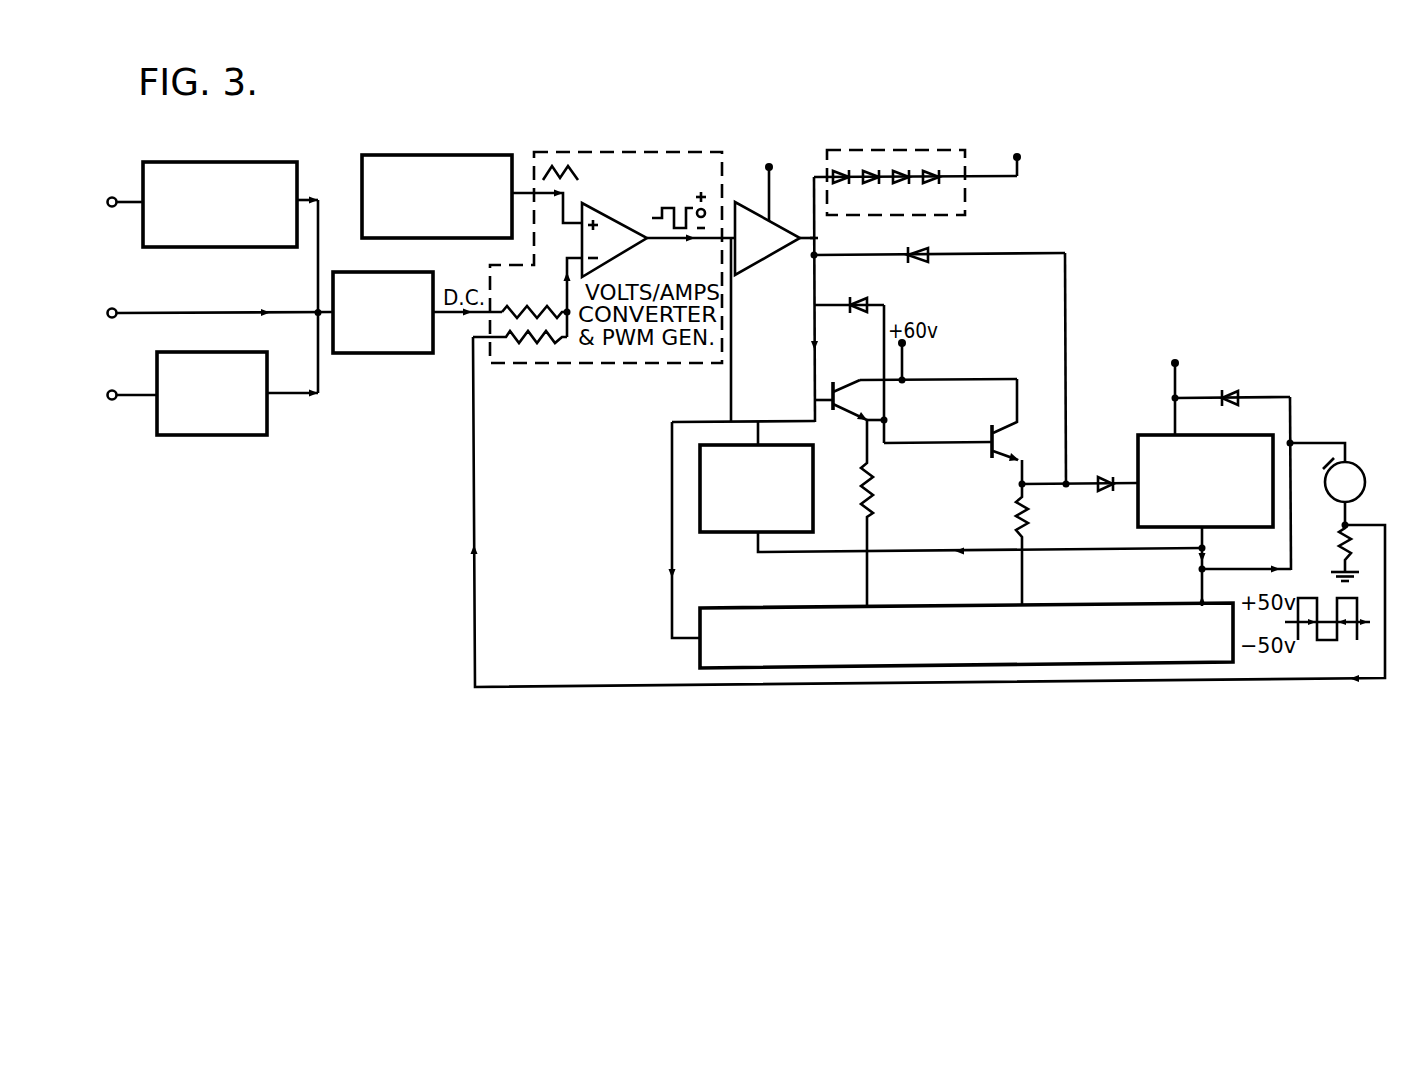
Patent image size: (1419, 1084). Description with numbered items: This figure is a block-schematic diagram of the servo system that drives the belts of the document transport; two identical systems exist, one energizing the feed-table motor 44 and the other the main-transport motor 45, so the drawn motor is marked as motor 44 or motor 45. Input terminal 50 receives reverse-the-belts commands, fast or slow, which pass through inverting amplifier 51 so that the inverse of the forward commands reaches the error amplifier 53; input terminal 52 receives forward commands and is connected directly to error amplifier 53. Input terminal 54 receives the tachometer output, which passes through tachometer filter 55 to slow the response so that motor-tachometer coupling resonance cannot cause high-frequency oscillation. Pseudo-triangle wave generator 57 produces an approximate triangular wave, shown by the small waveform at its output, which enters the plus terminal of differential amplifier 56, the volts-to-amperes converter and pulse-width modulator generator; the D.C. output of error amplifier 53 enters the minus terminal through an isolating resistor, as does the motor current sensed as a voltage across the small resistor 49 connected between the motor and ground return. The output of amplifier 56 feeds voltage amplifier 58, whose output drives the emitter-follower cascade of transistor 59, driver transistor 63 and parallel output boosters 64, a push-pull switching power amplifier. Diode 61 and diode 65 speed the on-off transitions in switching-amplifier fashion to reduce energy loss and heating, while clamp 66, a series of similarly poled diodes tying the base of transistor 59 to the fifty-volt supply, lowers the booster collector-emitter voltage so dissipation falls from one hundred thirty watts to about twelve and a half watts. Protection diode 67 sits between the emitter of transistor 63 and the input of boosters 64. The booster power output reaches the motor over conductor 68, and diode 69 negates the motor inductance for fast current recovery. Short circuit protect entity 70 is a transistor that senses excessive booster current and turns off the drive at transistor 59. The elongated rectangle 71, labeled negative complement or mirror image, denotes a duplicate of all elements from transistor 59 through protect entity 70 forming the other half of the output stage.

The motor 44 is at (1357, 467).
The motor 45 is at (1373, 492).
The resistor 49 is at (1332, 552).
The input terminal 50 is at (120, 219).
The inverting amplifier 51 is at (297, 180).
The input terminal 52 is at (218, 300).
The error amplifier 53 is at (373, 354).
The input terminal 54 is at (133, 381).
The tachometer filter 55 is at (267, 415).
The amplifier 56 is at (608, 218).
The pseudo-triangle wave generator 57 is at (362, 219).
The voltage amplifier 58 is at (751, 265).
The transistor 59 is at (843, 381).
The diode 61 is at (858, 294).
The driver transistor 63 is at (1003, 440).
The parallel output boosters 64 is at (1150, 435).
The diode 65 is at (927, 250).
The clamp 66 is at (865, 216).
The diode 67 is at (1111, 469).
The conductor 68 is at (1240, 569).
The diode 69 is at (1230, 389).
The short circuit protect entity 70 is at (746, 532).
The elongated rectangle 71 is at (763, 607).